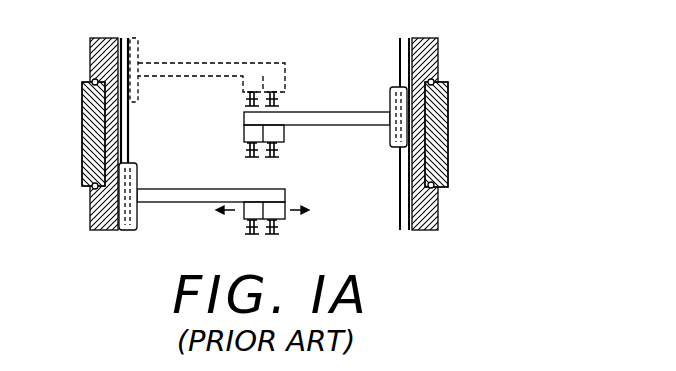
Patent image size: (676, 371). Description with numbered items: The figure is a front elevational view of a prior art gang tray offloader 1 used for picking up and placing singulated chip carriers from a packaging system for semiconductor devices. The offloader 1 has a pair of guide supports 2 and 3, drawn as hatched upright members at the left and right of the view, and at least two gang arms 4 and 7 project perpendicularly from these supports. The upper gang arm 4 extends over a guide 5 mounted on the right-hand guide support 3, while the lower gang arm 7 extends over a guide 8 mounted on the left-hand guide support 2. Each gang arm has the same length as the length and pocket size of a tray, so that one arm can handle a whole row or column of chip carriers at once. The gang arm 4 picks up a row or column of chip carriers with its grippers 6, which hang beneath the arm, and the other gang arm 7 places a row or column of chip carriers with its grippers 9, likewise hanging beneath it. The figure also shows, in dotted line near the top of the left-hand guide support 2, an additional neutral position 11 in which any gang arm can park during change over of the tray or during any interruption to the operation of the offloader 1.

The gang tray offloader 1 is at (462, 121).
The guide support 2 is at (88, 200).
The guide support 3 is at (440, 198).
The gang arm 4 is at (330, 112).
The guide 5 is at (390, 146).
The grippers 6 is at (283, 146).
The gang arm 7 is at (177, 188).
The guide 8 is at (138, 223).
The grippers 9 is at (286, 222).
The neutral position 11 is at (213, 62).